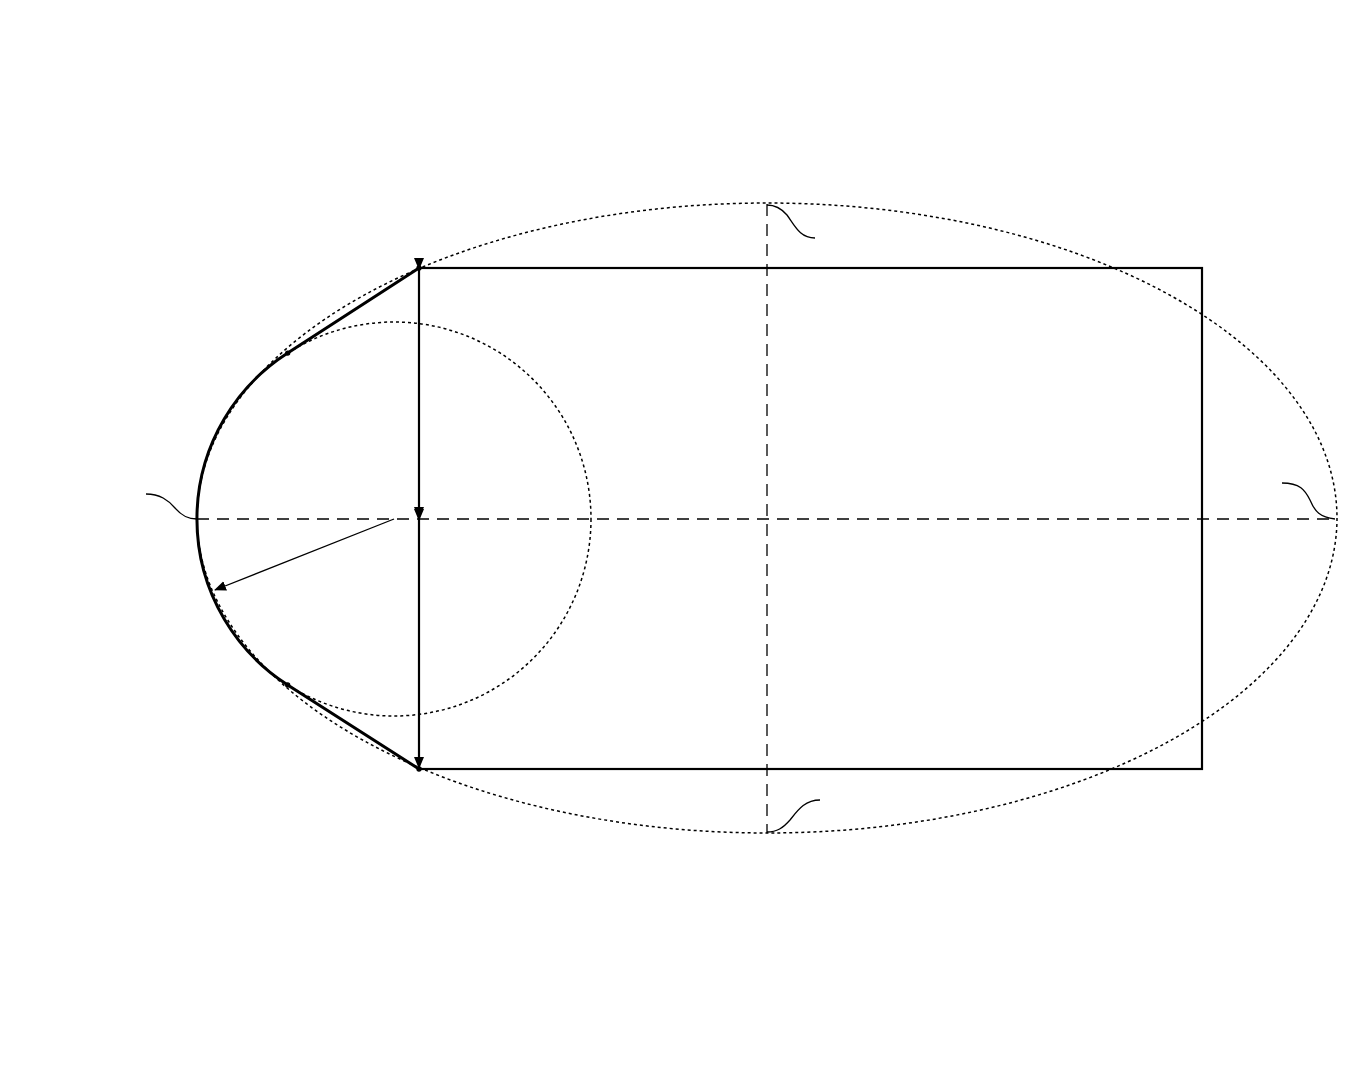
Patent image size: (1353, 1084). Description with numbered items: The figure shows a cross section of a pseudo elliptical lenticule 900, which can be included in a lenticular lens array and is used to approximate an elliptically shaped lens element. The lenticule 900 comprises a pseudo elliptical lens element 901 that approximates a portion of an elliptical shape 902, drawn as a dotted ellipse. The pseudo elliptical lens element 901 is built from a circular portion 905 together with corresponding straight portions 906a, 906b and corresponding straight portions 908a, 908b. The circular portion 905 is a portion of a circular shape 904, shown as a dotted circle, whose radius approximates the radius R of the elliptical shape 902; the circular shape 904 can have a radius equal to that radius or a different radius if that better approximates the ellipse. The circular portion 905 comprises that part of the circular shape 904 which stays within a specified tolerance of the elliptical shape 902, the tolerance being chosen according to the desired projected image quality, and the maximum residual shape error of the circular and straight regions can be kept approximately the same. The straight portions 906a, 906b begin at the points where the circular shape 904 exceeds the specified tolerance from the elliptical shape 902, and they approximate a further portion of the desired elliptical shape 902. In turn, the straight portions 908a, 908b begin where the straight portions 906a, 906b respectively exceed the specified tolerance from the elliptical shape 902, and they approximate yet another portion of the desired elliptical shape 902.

The pseudo elliptical lenticule 900 is at (761, 123).
The pseudo elliptical lens element 901 is at (142, 252).
The elliptical shape 902 is at (1030, 238).
The circular shape 904 is at (558, 413).
The circular portion 905 is at (213, 438).
The straight portion 906a is at (290, 352).
The straight portion 906b is at (286, 686).
The straight portion 908a is at (392, 288).
The straight portion 908b is at (403, 765).